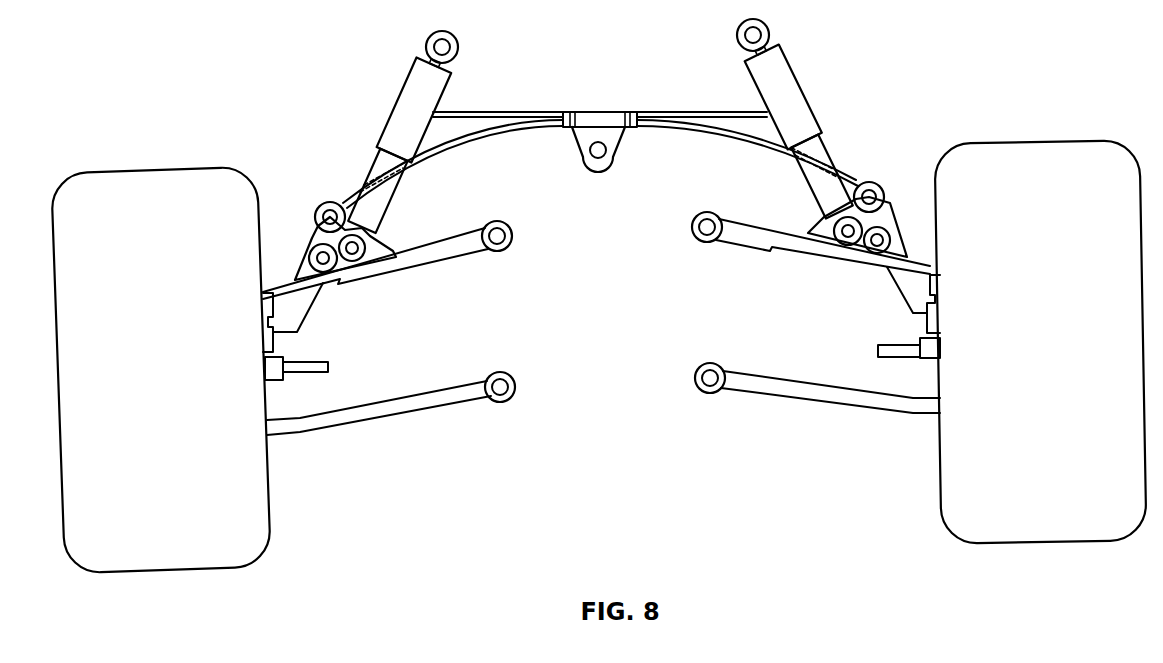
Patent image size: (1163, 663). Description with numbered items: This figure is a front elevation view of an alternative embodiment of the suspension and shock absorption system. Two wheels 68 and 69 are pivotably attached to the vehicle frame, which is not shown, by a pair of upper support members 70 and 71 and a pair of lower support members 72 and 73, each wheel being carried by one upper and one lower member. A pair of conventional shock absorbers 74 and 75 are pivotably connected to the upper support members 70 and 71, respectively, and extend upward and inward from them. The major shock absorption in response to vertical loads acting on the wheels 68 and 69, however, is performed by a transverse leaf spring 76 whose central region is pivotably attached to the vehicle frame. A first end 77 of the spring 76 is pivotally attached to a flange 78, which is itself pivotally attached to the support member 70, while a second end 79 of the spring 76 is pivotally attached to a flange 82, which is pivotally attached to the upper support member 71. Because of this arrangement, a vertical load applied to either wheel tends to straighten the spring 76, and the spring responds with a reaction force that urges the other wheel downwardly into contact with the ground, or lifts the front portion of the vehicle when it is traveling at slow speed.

The wheel 68 is at (170, 553).
The wheel 69 is at (1040, 530).
The upper support member 70 is at (457, 253).
The upper support member 71 is at (758, 253).
The lower support member 72 is at (387, 410).
The lower support member 73 is at (783, 387).
The shock absorber 74 is at (415, 92).
The shock absorber 75 is at (778, 72).
The leaf spring 76 is at (685, 127).
The first end of spring 77 is at (326, 205).
The flange 78 is at (312, 243).
The second end of spring 79 is at (850, 170).
The flange 82 is at (890, 203).